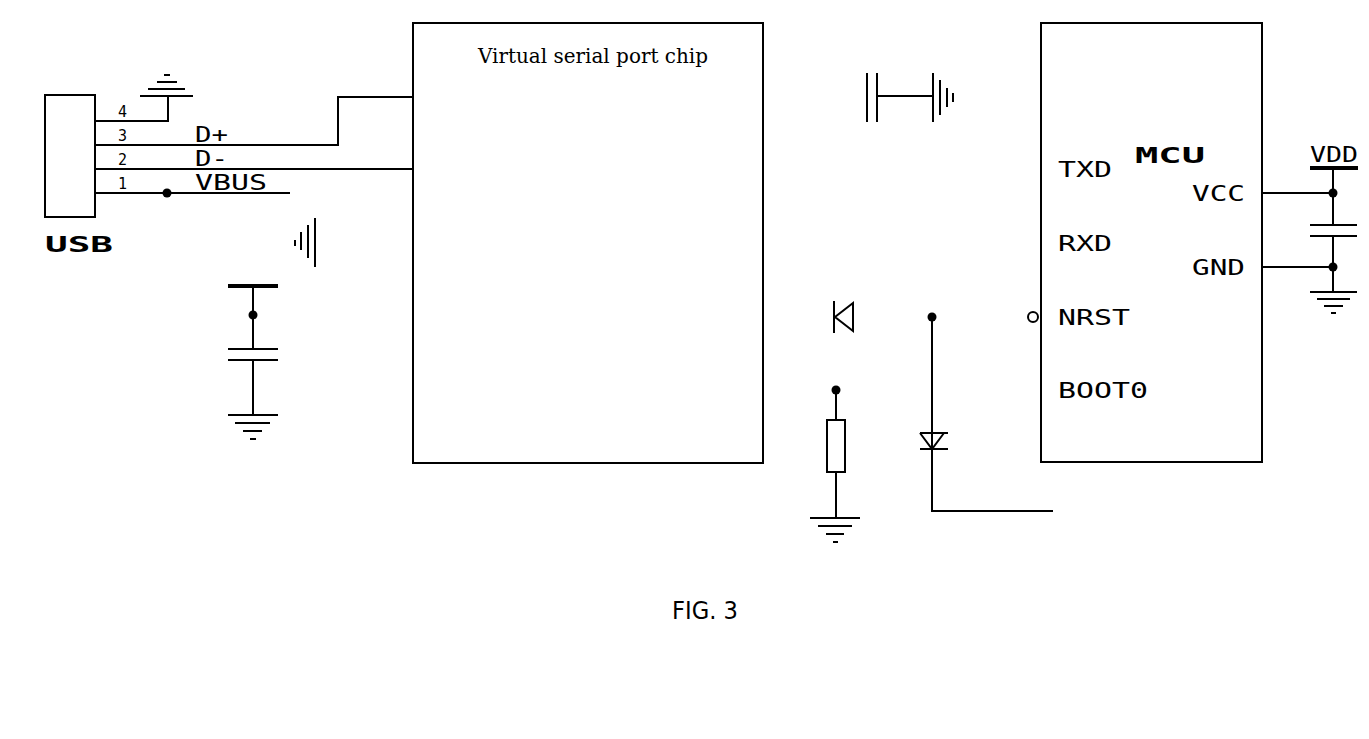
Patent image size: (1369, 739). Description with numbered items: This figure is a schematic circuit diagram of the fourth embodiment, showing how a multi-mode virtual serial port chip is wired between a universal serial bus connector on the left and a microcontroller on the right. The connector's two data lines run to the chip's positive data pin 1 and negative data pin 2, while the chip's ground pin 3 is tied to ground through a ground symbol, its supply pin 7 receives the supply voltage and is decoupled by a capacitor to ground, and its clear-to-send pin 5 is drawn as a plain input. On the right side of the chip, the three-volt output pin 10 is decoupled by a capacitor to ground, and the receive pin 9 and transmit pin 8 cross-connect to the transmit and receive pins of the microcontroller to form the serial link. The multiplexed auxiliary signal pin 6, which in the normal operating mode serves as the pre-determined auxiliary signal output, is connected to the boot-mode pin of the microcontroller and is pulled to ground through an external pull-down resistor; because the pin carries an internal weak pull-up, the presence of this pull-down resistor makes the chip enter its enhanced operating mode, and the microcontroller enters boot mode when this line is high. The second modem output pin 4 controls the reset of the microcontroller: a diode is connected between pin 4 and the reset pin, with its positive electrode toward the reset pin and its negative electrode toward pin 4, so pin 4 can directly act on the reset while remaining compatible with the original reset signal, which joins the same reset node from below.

The UD+ pin of virtual serial port chip 1 is at (433, 94).
The UD- pin of virtual serial port chip 2 is at (433, 166).
The GND pin of virtual serial port chip 3 is at (315, 243).
The RTS# pin of virtual serial port chip 4 is at (1028, 317).
The CTS# pin of virtual serial port chip 5 is at (338, 390).
The TNOU/DTR# pin of virtual serial port chip 6 is at (1041, 390).
The VCC pin of virtual serial port chip 7 is at (253, 315).
The TXD pin of virtual serial port chip 8 is at (1041, 243).
The RXD pin of virtual serial port chip 9 is at (1041, 169).
The V3 pin of virtual serial port chip 10 is at (867, 96).